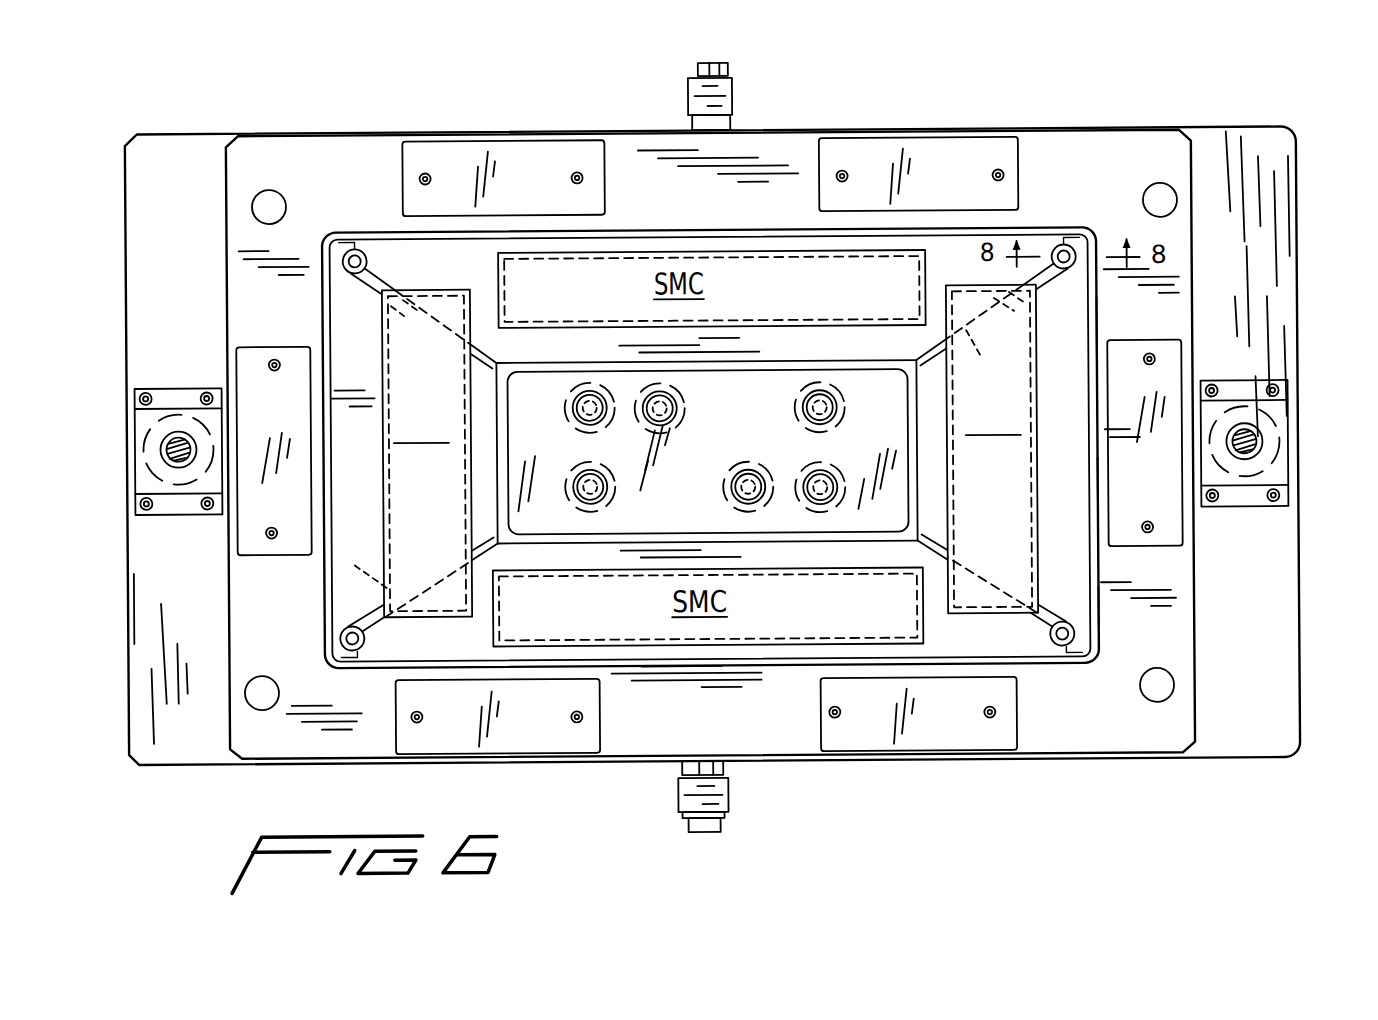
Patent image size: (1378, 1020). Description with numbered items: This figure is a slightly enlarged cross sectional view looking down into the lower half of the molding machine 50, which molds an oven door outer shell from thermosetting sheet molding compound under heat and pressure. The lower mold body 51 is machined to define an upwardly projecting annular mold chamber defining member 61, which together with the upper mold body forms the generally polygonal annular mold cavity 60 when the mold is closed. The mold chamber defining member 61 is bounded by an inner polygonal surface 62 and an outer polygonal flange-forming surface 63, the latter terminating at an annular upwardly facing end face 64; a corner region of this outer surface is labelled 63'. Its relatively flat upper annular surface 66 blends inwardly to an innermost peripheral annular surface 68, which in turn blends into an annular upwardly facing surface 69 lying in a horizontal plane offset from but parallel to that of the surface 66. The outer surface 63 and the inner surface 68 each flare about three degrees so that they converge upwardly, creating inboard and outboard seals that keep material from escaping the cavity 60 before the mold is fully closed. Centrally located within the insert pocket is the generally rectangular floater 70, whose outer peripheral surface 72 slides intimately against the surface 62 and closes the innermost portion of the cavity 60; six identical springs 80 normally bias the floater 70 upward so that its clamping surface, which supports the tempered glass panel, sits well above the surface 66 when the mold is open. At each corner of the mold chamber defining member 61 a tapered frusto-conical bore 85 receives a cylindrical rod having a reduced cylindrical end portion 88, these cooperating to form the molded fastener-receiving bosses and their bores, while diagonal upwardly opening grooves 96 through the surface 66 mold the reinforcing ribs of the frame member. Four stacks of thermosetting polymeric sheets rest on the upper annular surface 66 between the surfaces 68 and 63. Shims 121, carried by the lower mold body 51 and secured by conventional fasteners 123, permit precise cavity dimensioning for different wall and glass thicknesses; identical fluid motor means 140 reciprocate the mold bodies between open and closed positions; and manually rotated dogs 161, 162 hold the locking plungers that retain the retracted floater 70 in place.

The molding machine 50 is at (928, 107).
The lower mold body 51 is at (1311, 356).
The annular mold cavity 60 is at (674, 236).
The mold chamber defining member 61 is at (1125, 745).
The inner polygonal surface 62 is at (509, 424).
The outer polygonal flange-forming surface 63 is at (1072, 498).
The frame corner 63' is at (1124, 616).
The annular upwardly facing end face 64 is at (1095, 327).
The upper annular surface 66 is at (448, 269).
The innermost peripheral annular surface 68 is at (541, 364).
The annular upwardly facing surface 69 is at (705, 364).
The floater 70 is at (762, 386).
The outer peripheral surface 72 is at (500, 396).
The springs 80 is at (601, 420).
The tapered frusto-conical bore 85 is at (339, 631).
The reduced cylindrical end portion 88 is at (355, 650).
The diagonal grooves 96 is at (378, 278).
The shims 121 is at (542, 193).
The fasteners 123 is at (585, 177).
The fluid motor means 140 is at (157, 453).
The manually rotated dog 161 is at (725, 798).
The manually rotated dog 162 is at (735, 93).